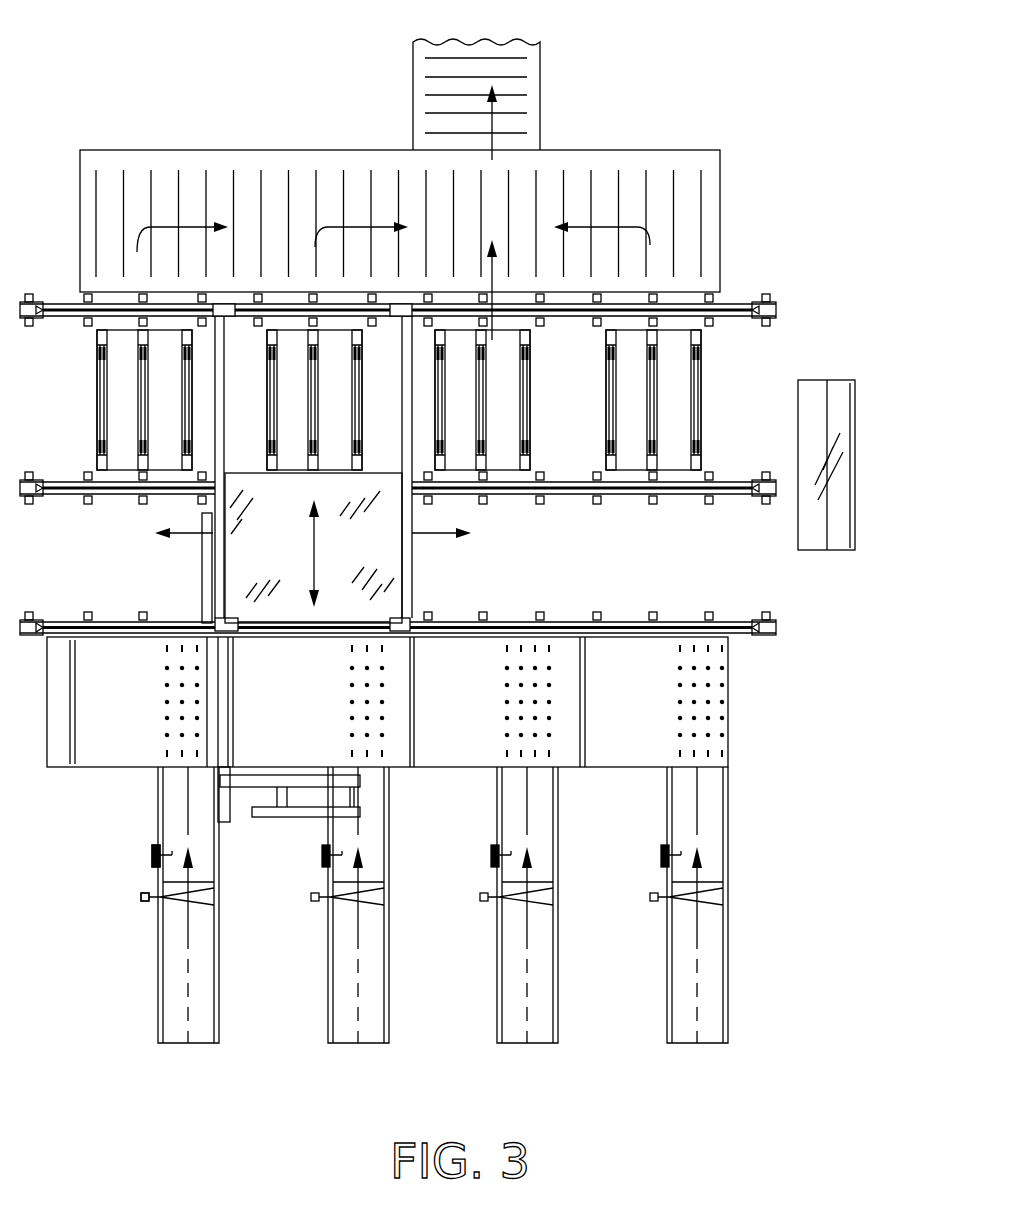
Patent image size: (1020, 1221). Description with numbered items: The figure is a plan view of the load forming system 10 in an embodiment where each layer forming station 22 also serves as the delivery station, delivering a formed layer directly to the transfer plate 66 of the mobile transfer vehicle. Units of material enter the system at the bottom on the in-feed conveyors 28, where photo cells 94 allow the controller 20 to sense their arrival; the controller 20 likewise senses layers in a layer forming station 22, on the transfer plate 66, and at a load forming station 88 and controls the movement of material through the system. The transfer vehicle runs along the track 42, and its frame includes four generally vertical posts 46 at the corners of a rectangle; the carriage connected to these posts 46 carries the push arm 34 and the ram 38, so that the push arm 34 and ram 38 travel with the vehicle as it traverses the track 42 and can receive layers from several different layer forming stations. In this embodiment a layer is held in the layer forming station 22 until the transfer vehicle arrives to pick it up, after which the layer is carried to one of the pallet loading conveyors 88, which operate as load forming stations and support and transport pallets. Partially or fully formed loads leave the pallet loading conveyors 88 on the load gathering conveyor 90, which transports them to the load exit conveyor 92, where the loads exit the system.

The load forming system 10 is at (693, 70).
The controller 20 is at (857, 480).
The layer forming station 22 is at (114, 768).
The in-feed conveyor 28 is at (158, 982).
The push arm 34 is at (233, 790).
The ram 38 is at (202, 566).
The track 42 is at (740, 318).
The posts 46 is at (228, 304).
The transfer plate 66 is at (296, 553).
The pallet loading conveyor 88 is at (97, 402).
The load gathering conveyor 90 is at (720, 222).
The load exit conveyor 92 is at (540, 98).
The photo cells 94 is at (142, 898).